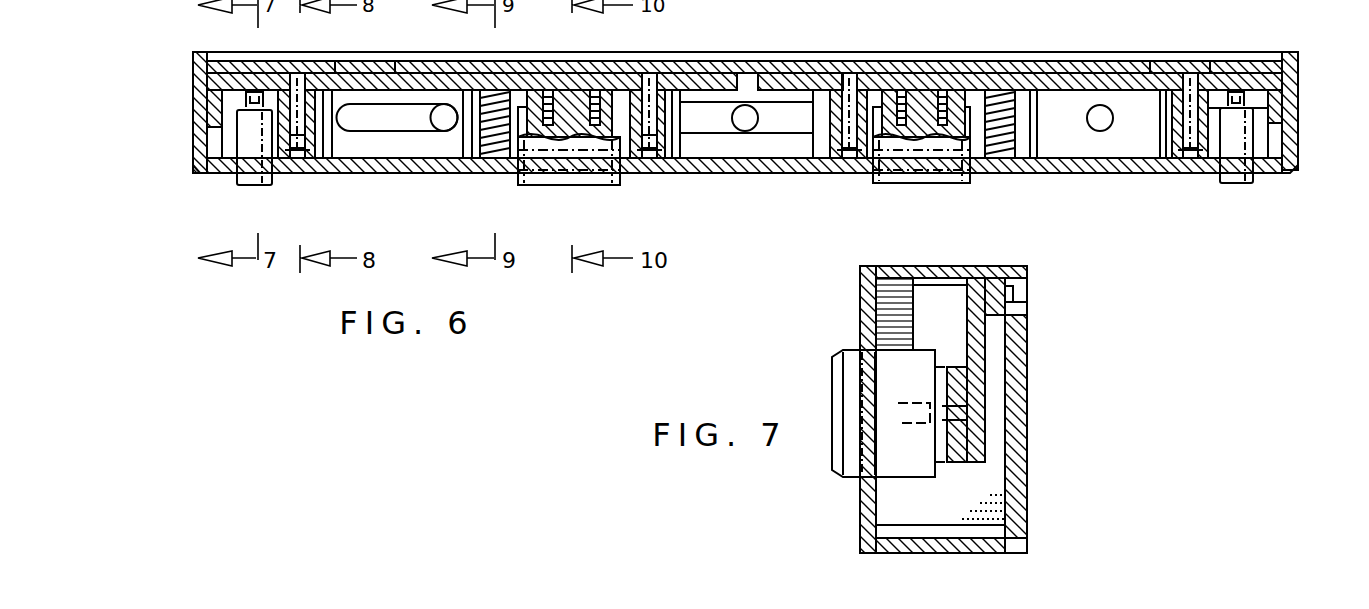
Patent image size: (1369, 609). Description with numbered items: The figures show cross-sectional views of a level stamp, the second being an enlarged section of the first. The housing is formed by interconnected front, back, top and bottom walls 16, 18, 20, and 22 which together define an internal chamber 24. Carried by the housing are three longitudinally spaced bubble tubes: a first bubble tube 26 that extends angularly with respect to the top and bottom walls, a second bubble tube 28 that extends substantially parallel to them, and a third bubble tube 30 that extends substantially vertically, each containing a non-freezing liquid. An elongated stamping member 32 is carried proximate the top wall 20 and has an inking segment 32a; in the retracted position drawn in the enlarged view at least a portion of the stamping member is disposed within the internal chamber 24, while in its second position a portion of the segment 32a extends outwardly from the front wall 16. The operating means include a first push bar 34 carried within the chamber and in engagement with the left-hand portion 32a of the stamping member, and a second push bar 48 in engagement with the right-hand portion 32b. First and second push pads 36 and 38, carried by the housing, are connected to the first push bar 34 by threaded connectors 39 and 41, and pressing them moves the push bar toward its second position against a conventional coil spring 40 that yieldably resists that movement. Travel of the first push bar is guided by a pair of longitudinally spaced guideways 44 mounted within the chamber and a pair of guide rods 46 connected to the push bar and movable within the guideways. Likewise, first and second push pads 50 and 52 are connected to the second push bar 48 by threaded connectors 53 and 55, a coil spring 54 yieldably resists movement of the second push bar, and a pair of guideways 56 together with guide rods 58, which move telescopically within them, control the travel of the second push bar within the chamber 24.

In FIG. 6, the front wall 16 is at (1015, 52).
In FIG. 7, the front wall 16 is at (1027, 503).
In FIG. 6, the back wall 18 is at (732, 173).
In FIG. 7, the back wall 18 is at (860, 305).
In FIG. 7, the top wall 20 is at (1008, 266).
In FIG. 7, the bottom wall 22 is at (1018, 556).
In FIG. 6, the internal chamber 24 is at (223, 150).
In FIG. 7, the internal chamber 24 is at (900, 500).
In FIG. 6, the first bubble tube 26 is at (418, 131).
In FIG. 6, the second bubble tube 28 is at (775, 134).
In FIG. 6, the third bubble tube 30 is at (1098, 131).
In FIG. 6, the elongated stamping member 32 is at (680, 64).
In FIG. 7, the elongated stamping member 32 is at (1014, 307).
In FIG. 6, the inking segment 32a is at (345, 66).
In FIG. 7, the inking segment 32a is at (1015, 293).
In FIG. 6, the right-hand portion 32b is at (1192, 66).
In FIG. 6, the first push bar 34 is at (466, 82).
In FIG. 7, the first push bar 34 is at (972, 338).
In FIG. 6, the first push pad 36 is at (253, 170).
In FIG. 7, the first push pad 36 is at (832, 382).
In FIG. 6, the second push pad 38 is at (560, 185).
In FIG. 6, the threaded connector 39 is at (254, 92).
In FIG. 7, the threaded connector 39 is at (950, 413).
In FIG. 6, the coil spring 40 is at (493, 148).
In FIG. 6, the threaded connector 41 is at (571, 130).
In FIG. 6, the guideways 44 is at (300, 145).
In FIG. 6, the guide rods 46 is at (297, 150).
In FIG. 6, the second push bar 48 is at (805, 80).
In FIG. 6, the first push pad 50 is at (1233, 170).
In FIG. 6, the second push pad 52 is at (960, 183).
In FIG. 6, the threaded connector 53 is at (1234, 92).
In FIG. 6, the coil spring 54 is at (998, 150).
In FIG. 6, the threaded connector 55 is at (922, 130).
In FIG. 6, the guideways 56 is at (836, 150).
In FIG. 6, the guide rods 58 is at (850, 150).